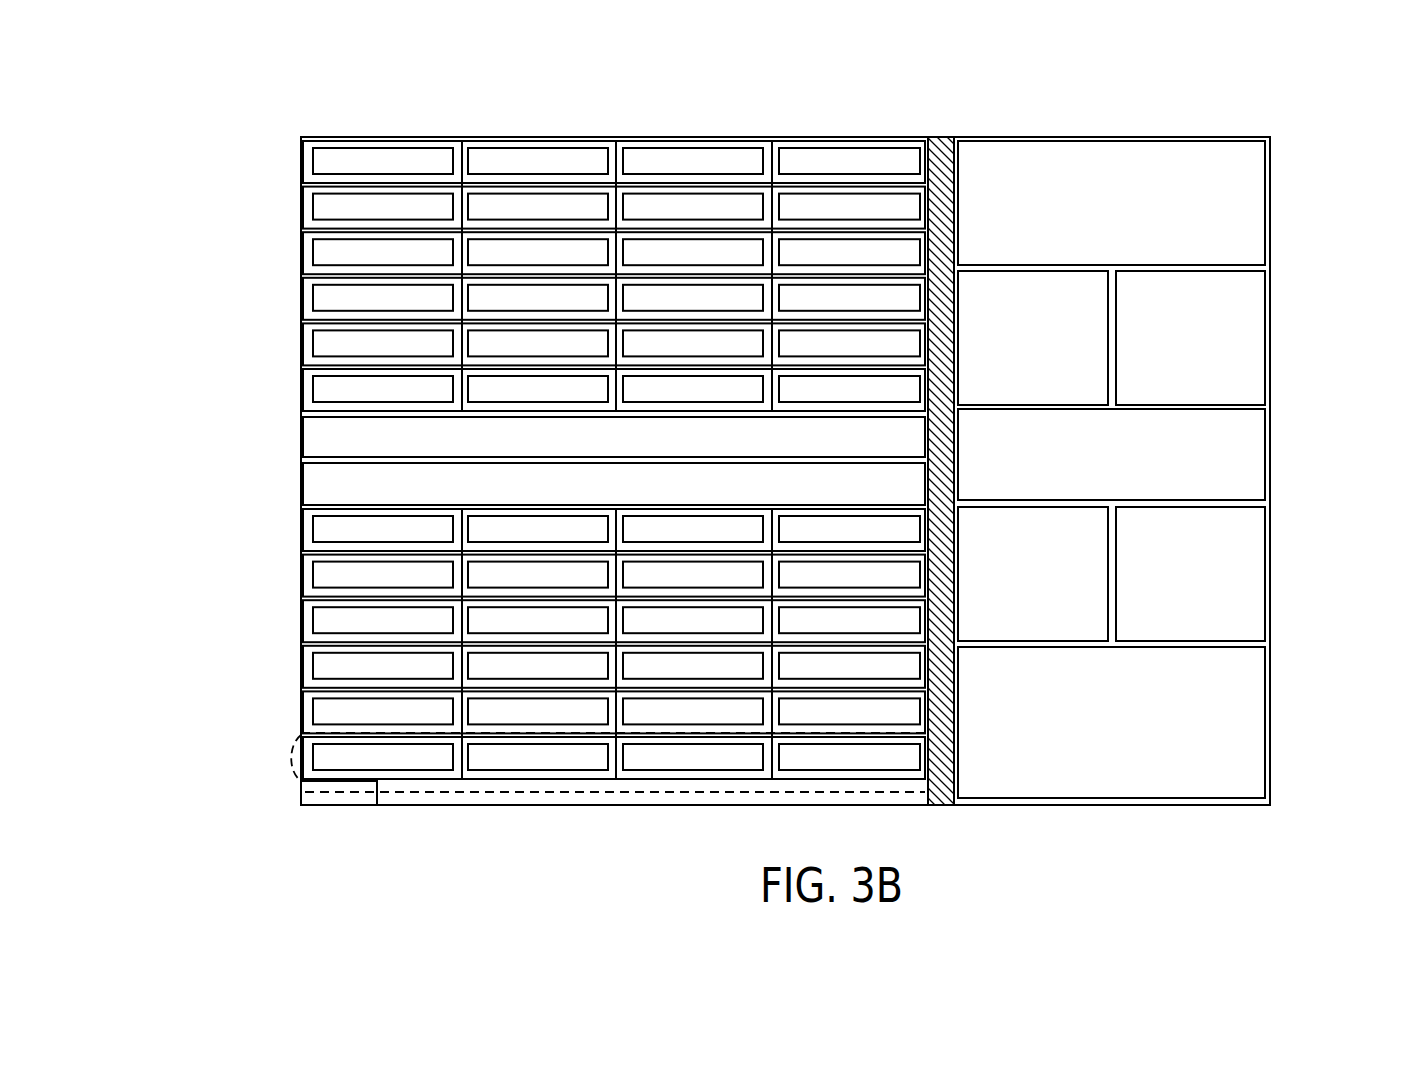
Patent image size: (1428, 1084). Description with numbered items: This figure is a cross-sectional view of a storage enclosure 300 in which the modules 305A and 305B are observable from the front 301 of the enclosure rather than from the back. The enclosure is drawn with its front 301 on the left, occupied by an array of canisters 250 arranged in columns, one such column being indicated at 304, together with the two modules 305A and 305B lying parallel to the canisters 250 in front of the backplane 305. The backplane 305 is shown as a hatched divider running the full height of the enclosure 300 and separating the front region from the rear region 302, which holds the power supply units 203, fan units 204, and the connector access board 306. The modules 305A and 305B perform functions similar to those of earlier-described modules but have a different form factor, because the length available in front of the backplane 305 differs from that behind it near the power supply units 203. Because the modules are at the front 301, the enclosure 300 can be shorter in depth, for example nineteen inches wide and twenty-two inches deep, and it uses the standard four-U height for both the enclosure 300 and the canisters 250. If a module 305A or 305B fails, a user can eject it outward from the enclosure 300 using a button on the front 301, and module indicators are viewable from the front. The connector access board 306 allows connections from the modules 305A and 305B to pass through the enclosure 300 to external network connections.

The storage enclosure 300 is at (790, 486).
The front 301 is at (549, 471).
The power and cooling section 302 is at (1183, 470).
The I/O slot column 304 is at (925, 130).
The backplane 305 is at (939, 136).
The module 305A is at (317, 487).
The module 305B is at (317, 432).
The connector access board 306 is at (1255, 468).
The power supply units 203 is at (1255, 203).
The fan module 204 is at (1255, 361).
The canisters 250 is at (673, 782).